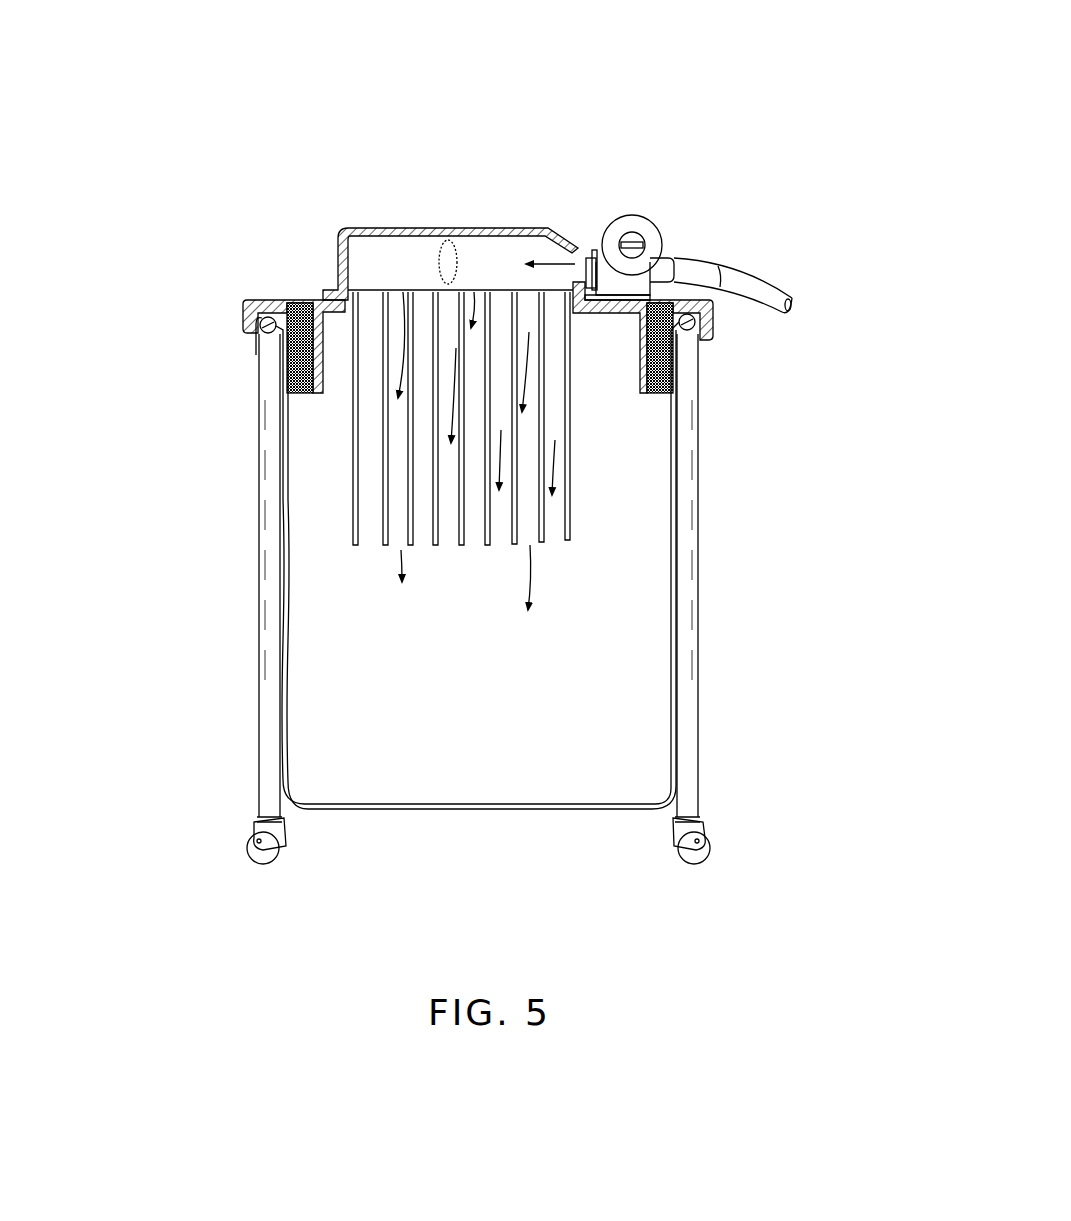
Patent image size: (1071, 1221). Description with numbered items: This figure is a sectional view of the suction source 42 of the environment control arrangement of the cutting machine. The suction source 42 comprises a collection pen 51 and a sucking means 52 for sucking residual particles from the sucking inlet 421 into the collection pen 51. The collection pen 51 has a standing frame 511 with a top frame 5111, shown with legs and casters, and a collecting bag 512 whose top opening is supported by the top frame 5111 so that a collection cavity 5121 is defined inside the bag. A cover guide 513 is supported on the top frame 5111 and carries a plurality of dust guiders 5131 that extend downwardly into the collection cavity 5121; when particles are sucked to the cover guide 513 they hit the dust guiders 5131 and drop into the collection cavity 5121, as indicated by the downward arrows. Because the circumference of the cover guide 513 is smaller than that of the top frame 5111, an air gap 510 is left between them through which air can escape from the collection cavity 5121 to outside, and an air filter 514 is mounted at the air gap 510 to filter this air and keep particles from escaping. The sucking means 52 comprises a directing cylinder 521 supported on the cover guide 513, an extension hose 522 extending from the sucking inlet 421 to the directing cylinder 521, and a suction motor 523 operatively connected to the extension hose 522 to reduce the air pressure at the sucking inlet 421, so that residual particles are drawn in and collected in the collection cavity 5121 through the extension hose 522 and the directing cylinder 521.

The suction source 42 is at (744, 926).
The sucking inlet 421 is at (797, 313).
The collection pen 51 is at (160, 717).
The air gap 510 is at (300, 400).
The standing frame 511 is at (275, 757).
The top frame 5111 is at (262, 323).
The collecting bag 512 is at (288, 548).
The collection cavity 5121 is at (450, 688).
The cover guide 513 is at (250, 300).
The dust guiders 5131 is at (565, 502).
The air filter 514 is at (297, 300).
The sucking means 52 is at (568, 100).
The directing cylinder 521 is at (400, 228).
The extension hose 522 is at (736, 274).
The suction motor 523 is at (633, 242).